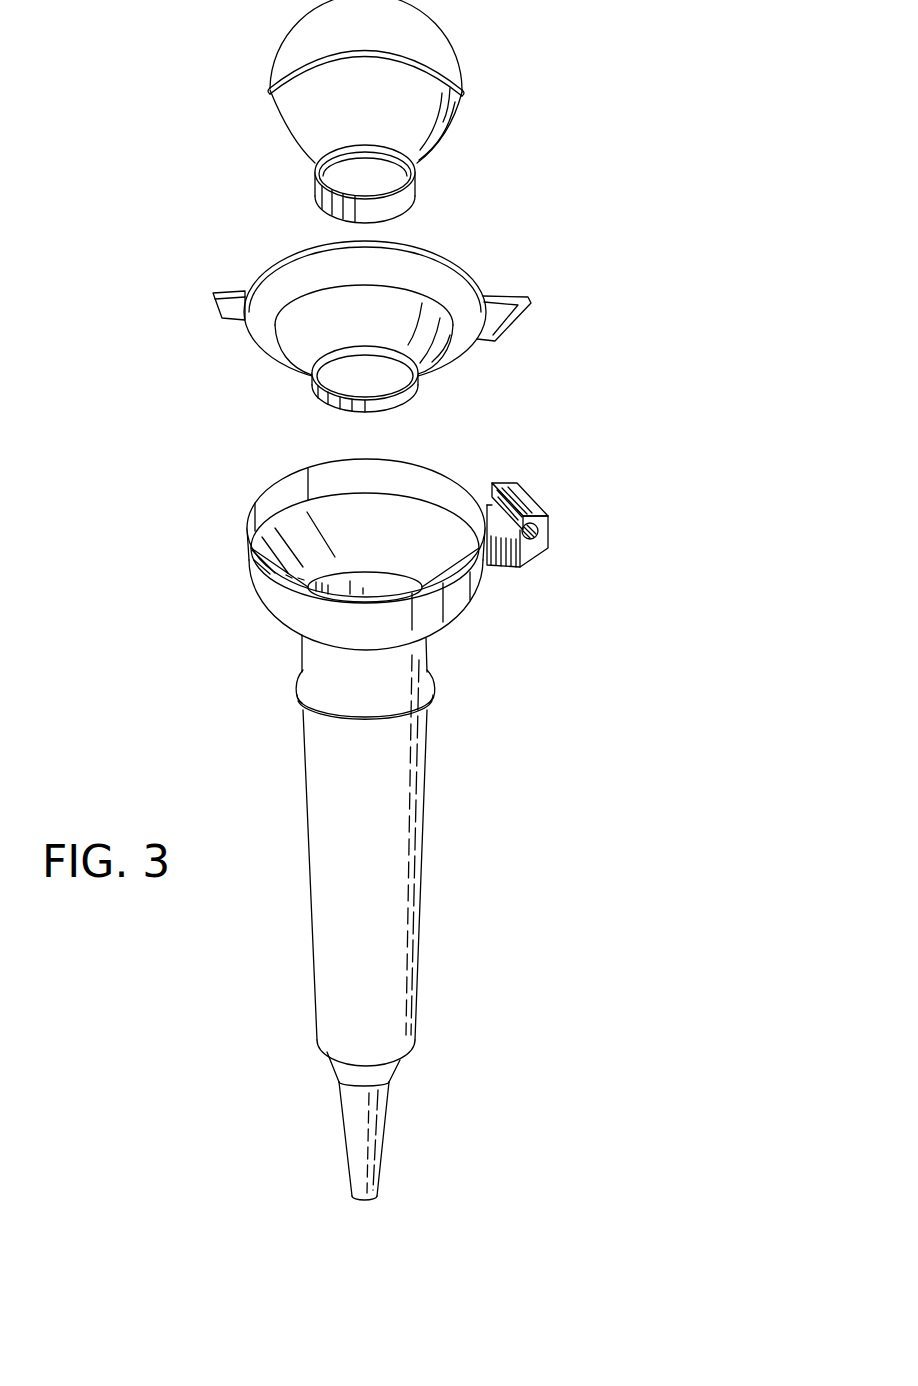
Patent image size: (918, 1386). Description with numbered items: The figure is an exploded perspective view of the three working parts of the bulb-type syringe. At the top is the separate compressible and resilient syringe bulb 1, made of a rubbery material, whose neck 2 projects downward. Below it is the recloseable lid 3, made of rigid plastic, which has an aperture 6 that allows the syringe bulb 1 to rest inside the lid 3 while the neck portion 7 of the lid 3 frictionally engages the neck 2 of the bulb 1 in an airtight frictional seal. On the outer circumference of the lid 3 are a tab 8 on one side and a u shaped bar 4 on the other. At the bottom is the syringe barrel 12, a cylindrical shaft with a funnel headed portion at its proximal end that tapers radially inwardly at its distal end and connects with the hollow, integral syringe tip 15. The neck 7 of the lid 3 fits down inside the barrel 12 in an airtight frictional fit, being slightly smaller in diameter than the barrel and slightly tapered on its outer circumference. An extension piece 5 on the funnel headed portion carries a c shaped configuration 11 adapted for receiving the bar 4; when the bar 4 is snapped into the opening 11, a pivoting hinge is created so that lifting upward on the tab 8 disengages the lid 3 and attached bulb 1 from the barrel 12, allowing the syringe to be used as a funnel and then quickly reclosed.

The syringe bulb 1 is at (458, 60).
The neck of the bulb 2 is at (416, 168).
The recloseable lid 3 is at (282, 262).
The u shaped bar 4 is at (520, 320).
The extension piece 5 is at (530, 552).
The aperture 6 is at (276, 347).
The neck portion of the lid 7 is at (419, 376).
The tab 8 is at (218, 308).
The c shaped configuration 11 is at (540, 530).
The syringe barrel 12 is at (420, 898).
The syringe tip 15 is at (357, 1143).